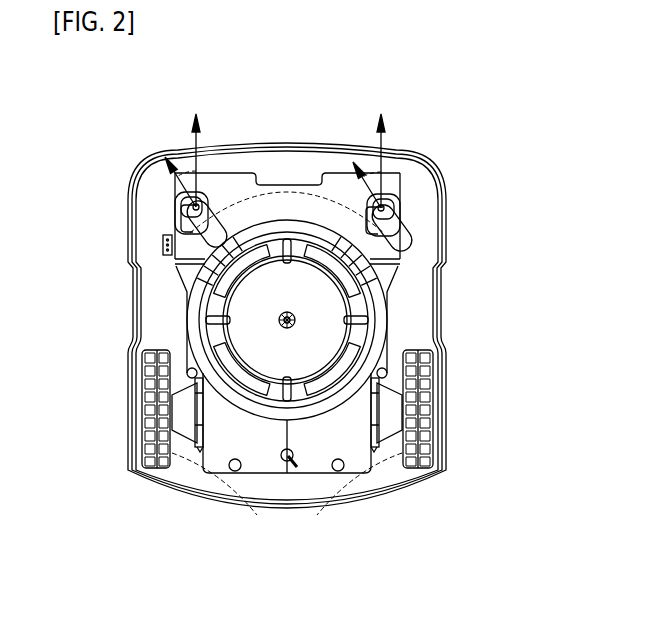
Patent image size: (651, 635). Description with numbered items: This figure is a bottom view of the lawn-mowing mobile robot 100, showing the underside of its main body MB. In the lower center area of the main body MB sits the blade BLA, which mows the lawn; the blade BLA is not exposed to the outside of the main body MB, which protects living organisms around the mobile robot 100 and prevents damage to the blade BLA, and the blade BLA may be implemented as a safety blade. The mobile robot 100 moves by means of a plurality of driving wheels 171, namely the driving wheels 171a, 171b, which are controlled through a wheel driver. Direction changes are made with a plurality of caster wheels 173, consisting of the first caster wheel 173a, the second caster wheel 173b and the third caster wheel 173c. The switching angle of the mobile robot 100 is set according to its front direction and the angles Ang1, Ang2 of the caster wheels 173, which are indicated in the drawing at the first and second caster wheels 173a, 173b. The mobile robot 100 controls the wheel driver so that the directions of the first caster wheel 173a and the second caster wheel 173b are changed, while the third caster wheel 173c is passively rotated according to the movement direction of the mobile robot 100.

The mobile robot 100 is at (108, 512).
The main body MB is at (111, 148).
The blade BLA is at (152, 229).
The angle of the caster wheel Ang1 is at (187, 168).
The angle of the caster wheel Ang2 is at (374, 170).
The driving wheel 171 is at (312, 548).
The driving wheel 171a is at (224, 499).
The driving wheel 171b is at (348, 499).
The caster wheel 173 is at (497, 162).
The first caster wheel 173a is at (393, 193).
The second caster wheel 173b is at (392, 232).
The third caster wheel 173c is at (293, 457).